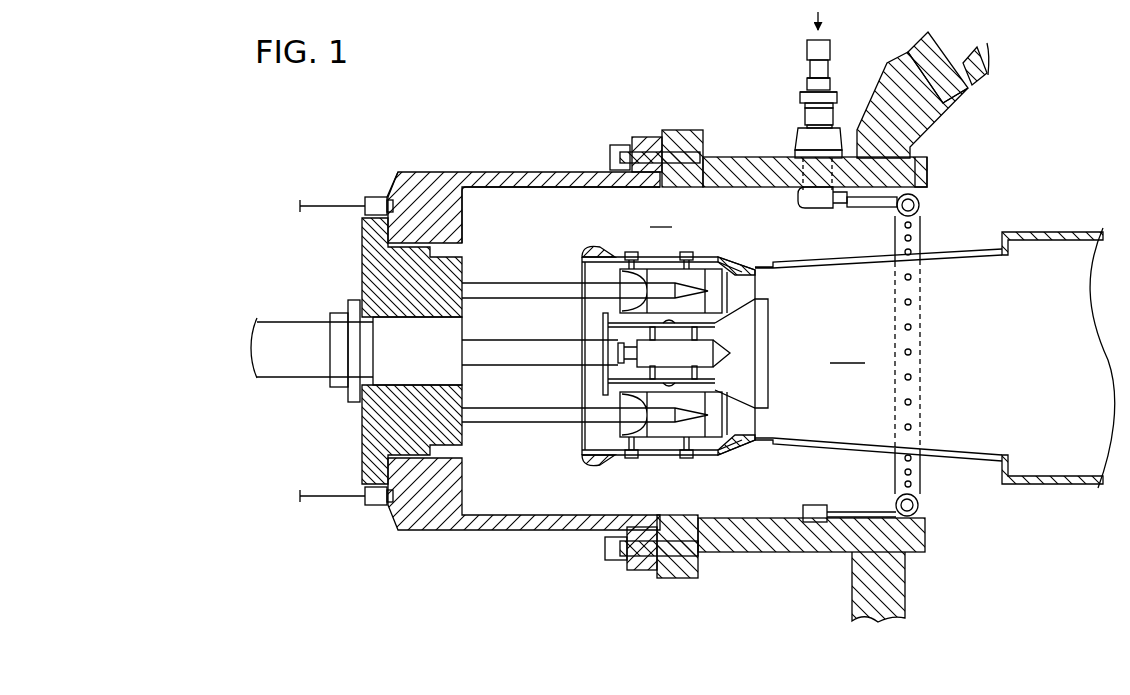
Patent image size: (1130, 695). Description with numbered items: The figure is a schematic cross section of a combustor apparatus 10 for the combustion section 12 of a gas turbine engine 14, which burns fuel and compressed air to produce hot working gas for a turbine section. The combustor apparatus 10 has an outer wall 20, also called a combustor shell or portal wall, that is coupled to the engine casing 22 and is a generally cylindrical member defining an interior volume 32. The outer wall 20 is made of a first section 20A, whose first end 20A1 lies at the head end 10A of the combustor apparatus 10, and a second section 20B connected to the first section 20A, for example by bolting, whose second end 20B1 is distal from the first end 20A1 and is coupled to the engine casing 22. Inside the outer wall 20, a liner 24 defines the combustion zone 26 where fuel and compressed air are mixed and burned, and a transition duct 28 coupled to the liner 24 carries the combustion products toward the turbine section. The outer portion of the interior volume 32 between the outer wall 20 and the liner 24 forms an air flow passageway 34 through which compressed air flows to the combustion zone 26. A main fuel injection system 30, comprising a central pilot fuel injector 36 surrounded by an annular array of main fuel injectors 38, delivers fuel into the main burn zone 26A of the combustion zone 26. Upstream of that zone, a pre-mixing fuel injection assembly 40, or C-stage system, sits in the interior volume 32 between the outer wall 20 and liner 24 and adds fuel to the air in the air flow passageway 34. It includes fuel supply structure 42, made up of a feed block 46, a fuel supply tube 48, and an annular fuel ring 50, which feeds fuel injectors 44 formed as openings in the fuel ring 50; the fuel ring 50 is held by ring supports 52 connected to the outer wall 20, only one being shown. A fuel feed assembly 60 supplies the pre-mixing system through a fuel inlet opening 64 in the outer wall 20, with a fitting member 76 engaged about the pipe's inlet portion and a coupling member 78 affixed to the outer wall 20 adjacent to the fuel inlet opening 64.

The combustor apparatus 10 is at (441, 170).
The head end 10A is at (362, 272).
The combustion section 12 is at (1031, 92).
The gas turbine engine 14 is at (633, 83).
The outer wall 20 is at (506, 534).
The first section 20A is at (545, 182).
The first end 20A1 is at (465, 209).
The second section 20B is at (728, 187).
The second end 20B1 is at (930, 173).
The engine casing 22 is at (937, 46).
The liner 24 is at (805, 446).
The combustion zone 26 is at (942, 355).
The main burn zone 26A is at (849, 354).
The transition duct 28 is at (1060, 240).
The main fuel injection system 30 is at (616, 373).
The interior volume 32 is at (738, 507).
The air flow passageway 34 is at (662, 218).
The central pilot fuel injector 36 is at (540, 350).
The main fuel injectors 38 is at (537, 281).
The pre-mixing fuel injection assembly 40 is at (823, 223).
The fuel supply structure 42 is at (835, 214).
The fuel injectors 44 is at (913, 252).
The feed block 46 is at (815, 209).
The fuel supply tube 48 is at (868, 208).
The annular fuel ring 50 is at (916, 488).
The ring supports 52 is at (851, 506).
The fuel feed assembly 60 is at (809, 101).
The fuel inlet opening 64 is at (805, 172).
The fitting member 76 is at (840, 82).
The coupling member 78 is at (802, 133).